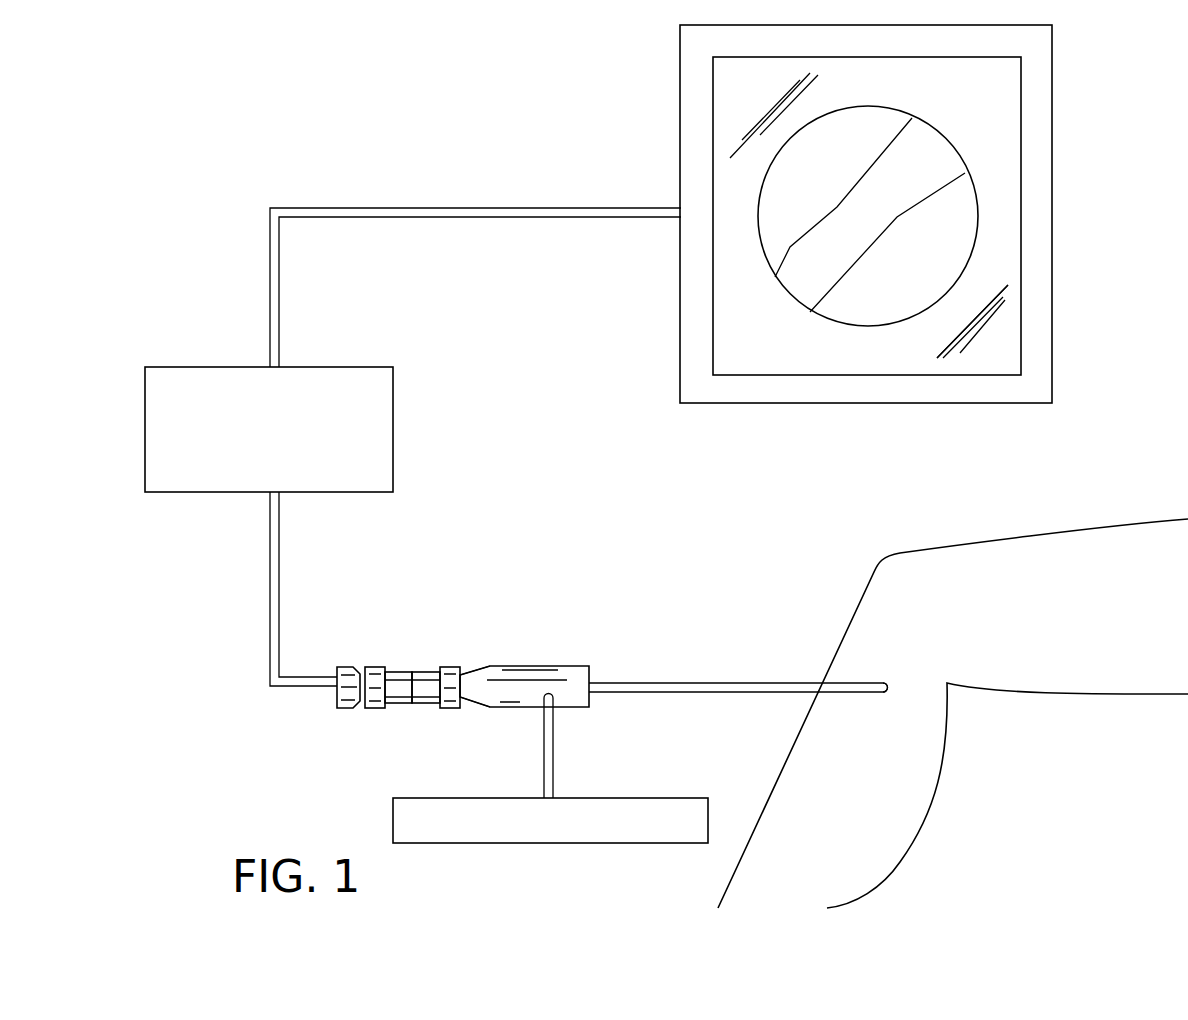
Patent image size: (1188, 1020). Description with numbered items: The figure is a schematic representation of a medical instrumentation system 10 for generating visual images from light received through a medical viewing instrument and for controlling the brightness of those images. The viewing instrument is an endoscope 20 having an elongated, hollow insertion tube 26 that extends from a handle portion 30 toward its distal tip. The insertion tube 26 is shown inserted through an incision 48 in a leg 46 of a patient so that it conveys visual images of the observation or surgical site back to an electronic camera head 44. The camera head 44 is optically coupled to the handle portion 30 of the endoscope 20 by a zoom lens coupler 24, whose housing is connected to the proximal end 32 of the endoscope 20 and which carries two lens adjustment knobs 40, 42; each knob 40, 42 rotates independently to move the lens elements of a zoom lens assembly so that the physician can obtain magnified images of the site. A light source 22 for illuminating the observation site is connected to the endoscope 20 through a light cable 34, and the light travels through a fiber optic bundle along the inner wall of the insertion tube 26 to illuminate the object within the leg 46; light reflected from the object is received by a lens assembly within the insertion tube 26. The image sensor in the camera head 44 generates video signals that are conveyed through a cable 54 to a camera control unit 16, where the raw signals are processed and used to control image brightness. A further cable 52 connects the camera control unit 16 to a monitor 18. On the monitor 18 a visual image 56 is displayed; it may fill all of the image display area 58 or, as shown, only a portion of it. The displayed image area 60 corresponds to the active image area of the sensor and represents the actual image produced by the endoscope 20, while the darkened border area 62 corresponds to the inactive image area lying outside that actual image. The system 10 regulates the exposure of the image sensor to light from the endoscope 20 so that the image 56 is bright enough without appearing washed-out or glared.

The medical instrumentation system 10 is at (404, 184).
The camera control unit 16 is at (345, 366).
The monitor 18 is at (690, 280).
The endoscope 20 is at (604, 652).
The light source 22 is at (652, 796).
The zoom lens coupler 24 is at (458, 656).
The insertion tube 26 is at (750, 688).
The handle portion 30 is at (502, 704).
The proximal end 32 is at (470, 672).
The light cable 34 is at (555, 732).
The lens adjustment knob 40 is at (398, 703).
The lens adjustment knob 42 is at (425, 703).
The electronic camera head 44 is at (350, 710).
The leg 46 is at (1084, 680).
The incision 48 is at (885, 680).
The video cable 52 is at (531, 218).
The cable 54 is at (280, 550).
The visual image 56 is at (883, 106).
The image display area 58 is at (1020, 109).
The displayed image area 60 is at (931, 273).
The darkened border area 62 is at (945, 366).